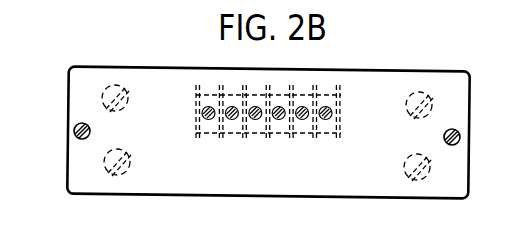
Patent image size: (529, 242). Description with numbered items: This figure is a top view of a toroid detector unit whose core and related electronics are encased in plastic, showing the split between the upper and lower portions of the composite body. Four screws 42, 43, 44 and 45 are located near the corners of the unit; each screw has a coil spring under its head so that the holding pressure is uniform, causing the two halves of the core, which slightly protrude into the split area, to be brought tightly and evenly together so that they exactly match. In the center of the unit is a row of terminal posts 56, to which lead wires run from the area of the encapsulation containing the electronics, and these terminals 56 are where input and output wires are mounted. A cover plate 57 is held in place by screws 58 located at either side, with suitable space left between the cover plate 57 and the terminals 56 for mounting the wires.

The screw 42 is at (121, 87).
The screw 43 is at (120, 174).
The screw 44 is at (420, 92).
The screw 45 is at (415, 180).
The terminal posts 56 is at (229, 124).
The cover plate 57 is at (277, 176).
The screws 58 is at (74, 131).